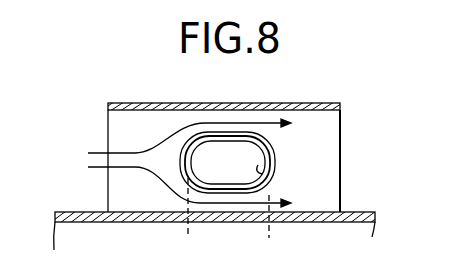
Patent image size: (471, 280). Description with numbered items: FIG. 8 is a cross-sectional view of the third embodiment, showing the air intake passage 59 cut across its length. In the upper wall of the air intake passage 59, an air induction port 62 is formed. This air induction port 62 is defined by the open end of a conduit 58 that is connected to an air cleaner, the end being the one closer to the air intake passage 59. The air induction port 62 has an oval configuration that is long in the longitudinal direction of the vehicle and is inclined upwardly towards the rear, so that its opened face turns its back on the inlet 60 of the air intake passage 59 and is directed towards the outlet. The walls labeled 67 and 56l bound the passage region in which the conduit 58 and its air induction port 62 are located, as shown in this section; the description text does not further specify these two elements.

The top wall / duct wall 67 is at (325, 128).
The bottom plate 56l is at (350, 212).
The inlet 60 is at (113, 124).
The air intake passage 59 is at (143, 200).
The conduit 58 is at (274, 153).
The air induction port 62 is at (262, 173).